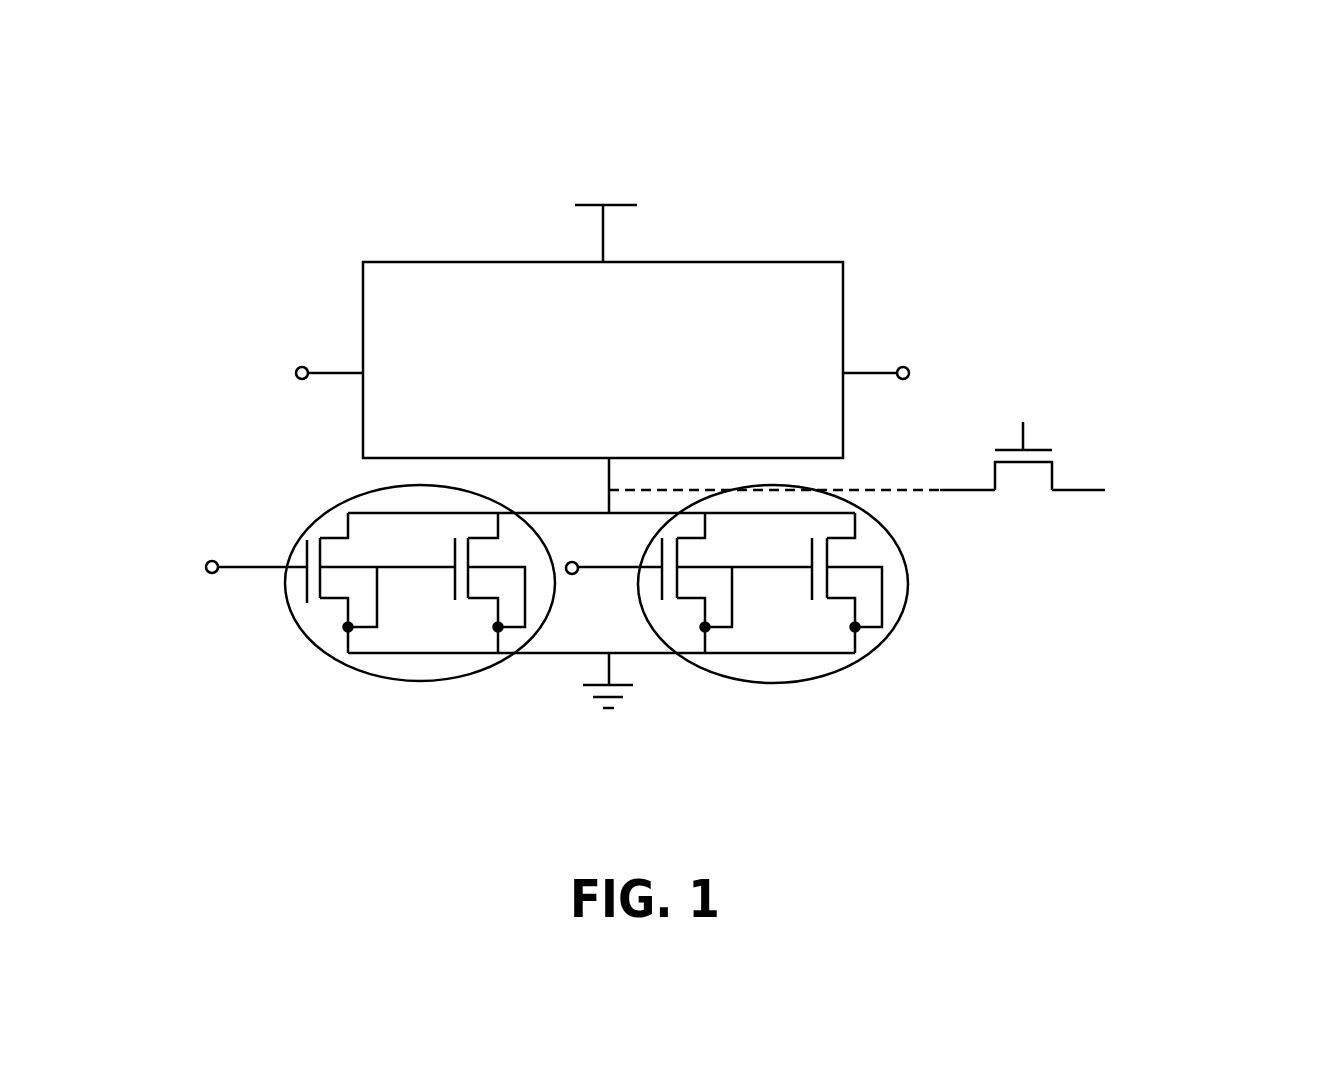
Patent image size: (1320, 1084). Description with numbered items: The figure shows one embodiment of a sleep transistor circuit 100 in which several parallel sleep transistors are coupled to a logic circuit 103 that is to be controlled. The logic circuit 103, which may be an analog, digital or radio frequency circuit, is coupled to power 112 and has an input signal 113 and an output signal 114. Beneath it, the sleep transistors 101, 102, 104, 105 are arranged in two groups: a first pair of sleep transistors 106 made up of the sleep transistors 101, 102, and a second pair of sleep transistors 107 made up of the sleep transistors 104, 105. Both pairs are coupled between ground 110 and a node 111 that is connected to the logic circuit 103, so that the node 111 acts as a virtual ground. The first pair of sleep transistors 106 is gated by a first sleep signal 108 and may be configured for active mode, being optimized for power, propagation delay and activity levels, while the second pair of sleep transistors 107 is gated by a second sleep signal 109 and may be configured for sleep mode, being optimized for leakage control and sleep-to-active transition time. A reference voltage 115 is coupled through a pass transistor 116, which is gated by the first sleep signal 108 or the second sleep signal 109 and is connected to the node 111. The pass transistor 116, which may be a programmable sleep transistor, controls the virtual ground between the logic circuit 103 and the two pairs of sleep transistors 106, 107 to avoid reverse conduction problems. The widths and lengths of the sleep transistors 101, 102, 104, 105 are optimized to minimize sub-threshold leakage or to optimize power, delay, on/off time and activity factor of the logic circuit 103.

The sleep transistor circuit 100 is at (993, 168).
The sleep transistor 101 is at (325, 622).
The sleep transistor 102 is at (463, 607).
The logic circuit 103 is at (846, 285).
The sleep transistor 104 is at (678, 628).
The sleep transistor 105 is at (870, 600).
The first pair of sleep transistors 106 is at (265, 582).
The second pair of sleep transistors 107 is at (910, 568).
The first sleep signal 108 is at (187, 513).
The second sleep signal 109 is at (555, 522).
The ground 110 is at (567, 702).
The node 111 is at (602, 490).
The power 112 is at (645, 148).
The input signal 113 is at (288, 317).
The output signal 114 is at (948, 363).
The reference voltage 115 is at (1192, 507).
The pass transistor 116 is at (1048, 502).